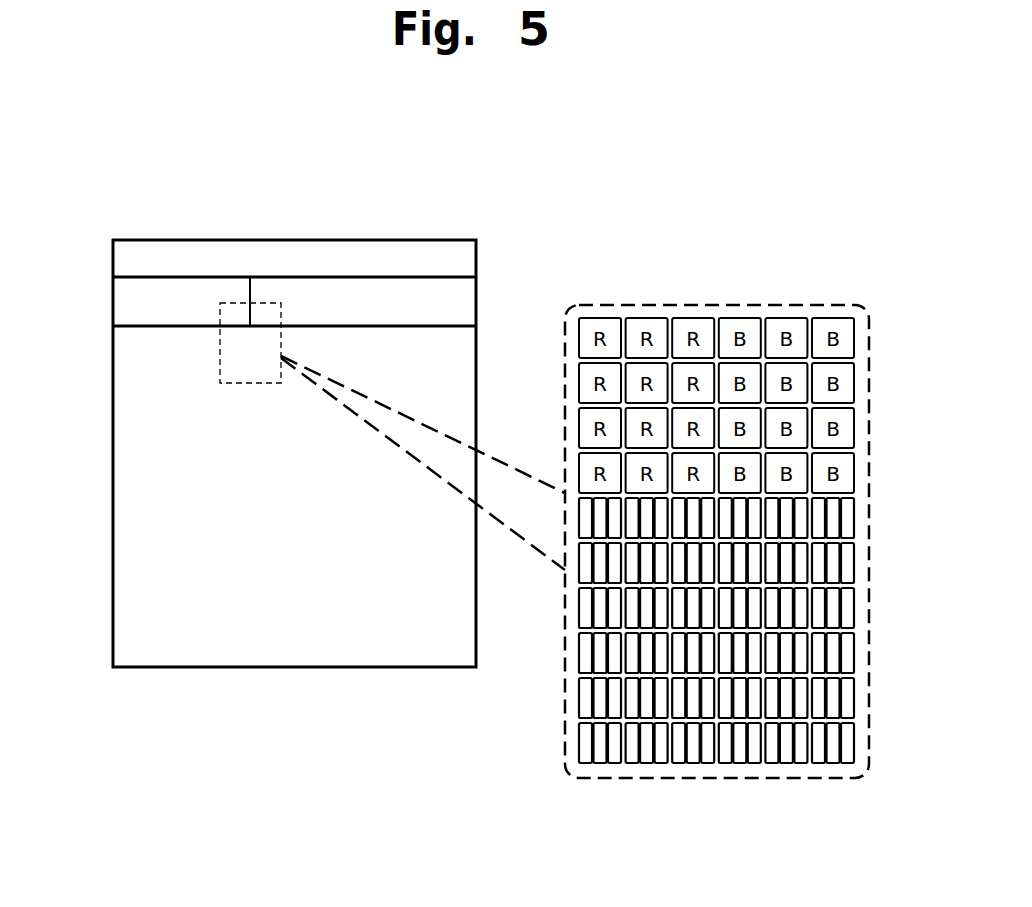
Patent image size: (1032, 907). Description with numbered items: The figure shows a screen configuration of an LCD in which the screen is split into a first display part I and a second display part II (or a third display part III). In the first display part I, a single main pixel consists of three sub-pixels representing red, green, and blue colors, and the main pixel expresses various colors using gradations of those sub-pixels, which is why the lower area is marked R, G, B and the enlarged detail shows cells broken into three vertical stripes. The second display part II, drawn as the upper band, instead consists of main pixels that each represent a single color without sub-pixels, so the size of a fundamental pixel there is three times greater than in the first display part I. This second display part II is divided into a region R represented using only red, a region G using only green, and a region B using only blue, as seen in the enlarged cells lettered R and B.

The first display part I is at (130, 468).
The second display part II is at (209, 293).
The third display part III is at (276, 255).